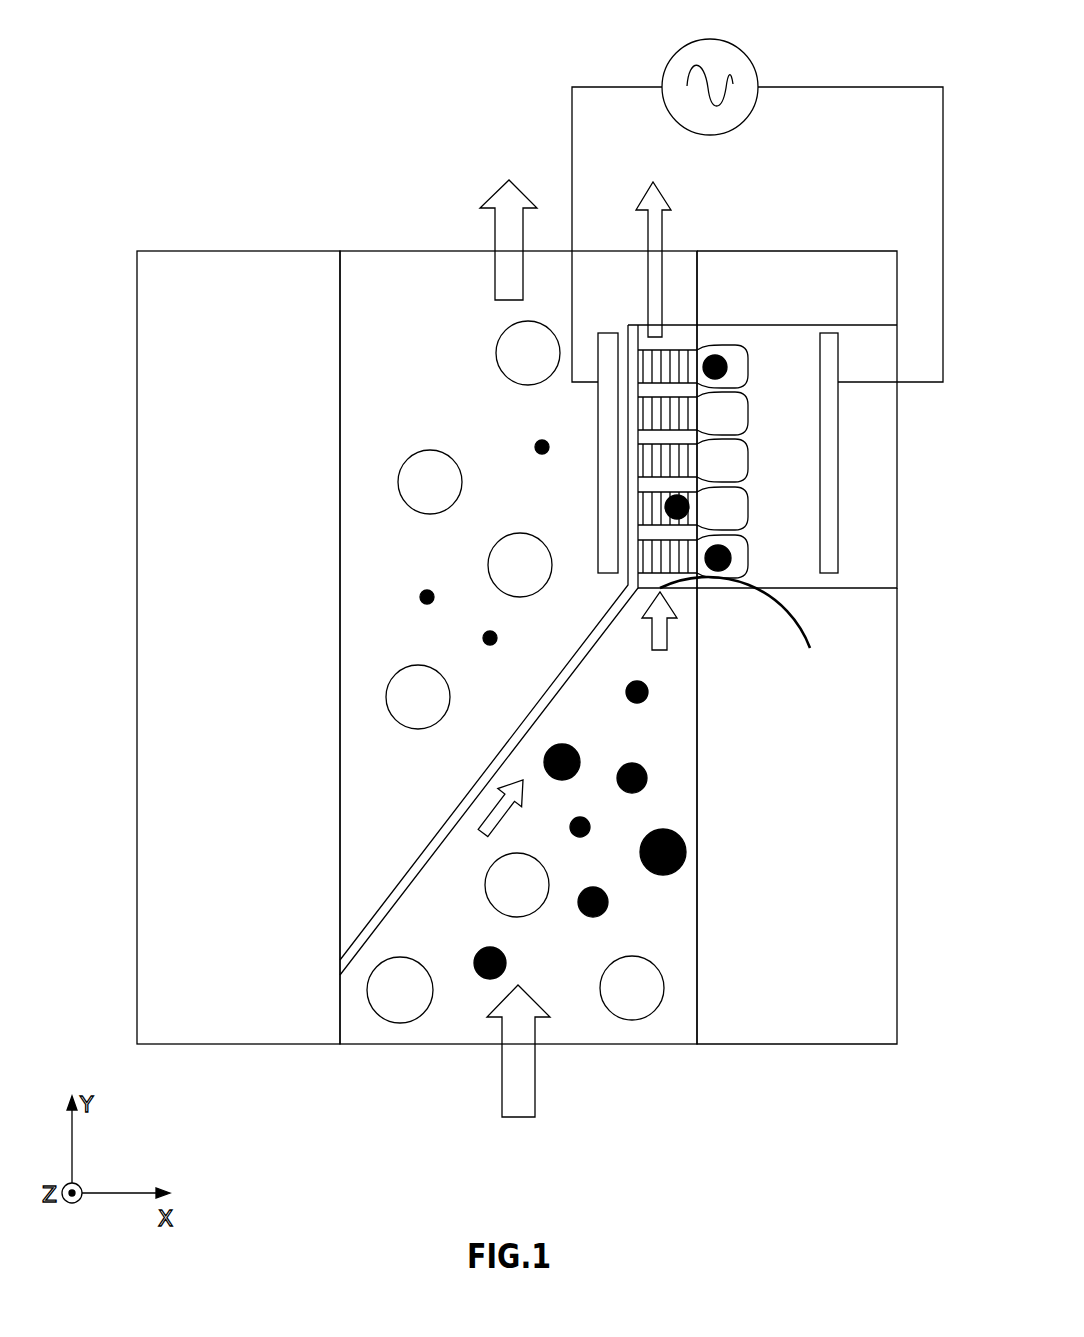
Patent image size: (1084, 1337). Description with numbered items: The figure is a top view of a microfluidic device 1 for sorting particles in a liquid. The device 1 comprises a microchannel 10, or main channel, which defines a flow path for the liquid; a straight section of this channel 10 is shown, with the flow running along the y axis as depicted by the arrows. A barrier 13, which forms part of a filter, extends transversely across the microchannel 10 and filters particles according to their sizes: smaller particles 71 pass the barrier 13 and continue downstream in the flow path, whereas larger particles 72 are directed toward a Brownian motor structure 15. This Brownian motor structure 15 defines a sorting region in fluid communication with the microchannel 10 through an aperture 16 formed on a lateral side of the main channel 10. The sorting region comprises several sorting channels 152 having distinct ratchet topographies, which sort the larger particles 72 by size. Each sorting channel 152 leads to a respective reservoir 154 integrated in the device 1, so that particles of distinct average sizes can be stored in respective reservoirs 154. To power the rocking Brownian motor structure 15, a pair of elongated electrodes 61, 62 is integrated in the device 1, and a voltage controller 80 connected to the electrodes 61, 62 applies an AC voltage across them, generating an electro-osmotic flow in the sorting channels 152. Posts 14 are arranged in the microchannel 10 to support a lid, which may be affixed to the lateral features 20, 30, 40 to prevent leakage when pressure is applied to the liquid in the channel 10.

The microfluidic device 1 is at (359, 1104).
The microchannel 10 is at (537, 648).
The barrier 13 is at (413, 865).
The posts 14 is at (417, 462).
The Brownian motor structure 15 is at (679, 594).
The aperture 16 is at (744, 633).
The lateral feature 20 is at (218, 265).
The lateral feature 30 is at (865, 265).
The lateral feature 40 is at (885, 868).
The electrode 61 is at (605, 331).
The electrode 62 is at (830, 333).
The smaller particles 71 is at (424, 592).
The larger particles 72 is at (647, 772).
The voltage controller 80 is at (752, 62).
The sorting channels 152 is at (672, 368).
The reservoirs 154 is at (738, 418).